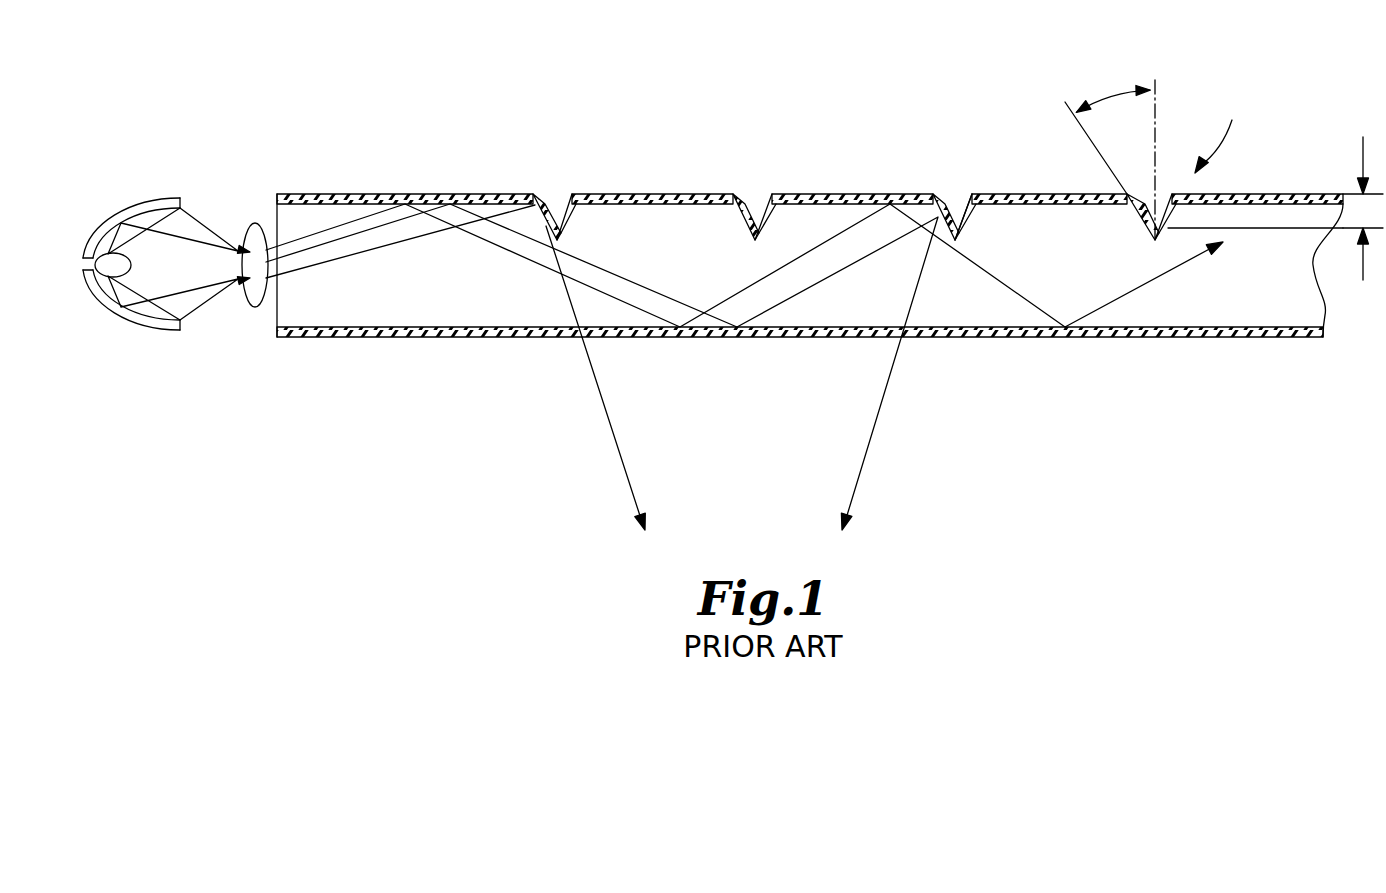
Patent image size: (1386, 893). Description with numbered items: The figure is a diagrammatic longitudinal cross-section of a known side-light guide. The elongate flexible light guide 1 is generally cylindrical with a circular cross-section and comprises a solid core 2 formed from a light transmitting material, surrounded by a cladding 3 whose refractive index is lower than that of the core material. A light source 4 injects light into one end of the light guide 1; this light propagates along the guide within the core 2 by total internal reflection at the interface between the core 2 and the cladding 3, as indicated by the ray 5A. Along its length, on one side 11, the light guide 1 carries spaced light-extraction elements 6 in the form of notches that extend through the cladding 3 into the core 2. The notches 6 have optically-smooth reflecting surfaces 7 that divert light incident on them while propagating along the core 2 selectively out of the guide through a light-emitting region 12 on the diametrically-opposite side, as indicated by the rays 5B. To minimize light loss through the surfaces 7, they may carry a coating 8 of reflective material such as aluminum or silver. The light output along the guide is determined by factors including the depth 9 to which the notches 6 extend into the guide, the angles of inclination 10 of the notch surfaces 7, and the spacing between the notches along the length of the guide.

The light guide 1 is at (438, 355).
The core 2 is at (652, 217).
The cladding 3 is at (1258, 200).
The light source 4 is at (127, 345).
The ray 5A is at (1130, 295).
The rays 5B is at (630, 493).
The light-extraction elements 6 is at (553, 198).
The reflecting surfaces 7 is at (543, 212).
The coating 8 is at (952, 207).
The depth 9 is at (1363, 208).
The angles of inclination 10 is at (1112, 92).
The side 11 is at (1229, 136).
The light-emitting region 12 is at (1095, 358).